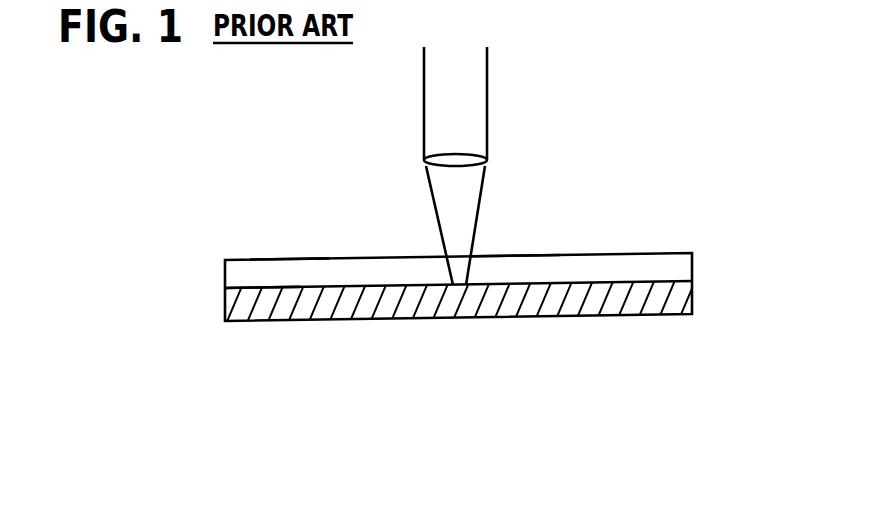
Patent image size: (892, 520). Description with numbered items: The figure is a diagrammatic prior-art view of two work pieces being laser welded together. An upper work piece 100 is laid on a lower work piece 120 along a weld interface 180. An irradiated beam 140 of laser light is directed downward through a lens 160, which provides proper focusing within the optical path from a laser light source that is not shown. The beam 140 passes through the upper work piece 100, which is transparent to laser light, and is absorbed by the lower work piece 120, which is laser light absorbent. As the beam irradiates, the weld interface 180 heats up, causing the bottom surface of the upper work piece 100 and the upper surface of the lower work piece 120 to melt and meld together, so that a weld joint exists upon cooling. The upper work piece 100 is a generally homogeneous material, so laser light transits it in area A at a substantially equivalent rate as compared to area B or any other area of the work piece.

The upper work piece 100 is at (692, 268).
The lower work piece 120 is at (692, 286).
The beam of laser light 140 is at (480, 199).
The lens 160 is at (489, 160).
The weld interface 180 is at (225, 290).
The area A is at (290, 260).
The area B is at (502, 257).